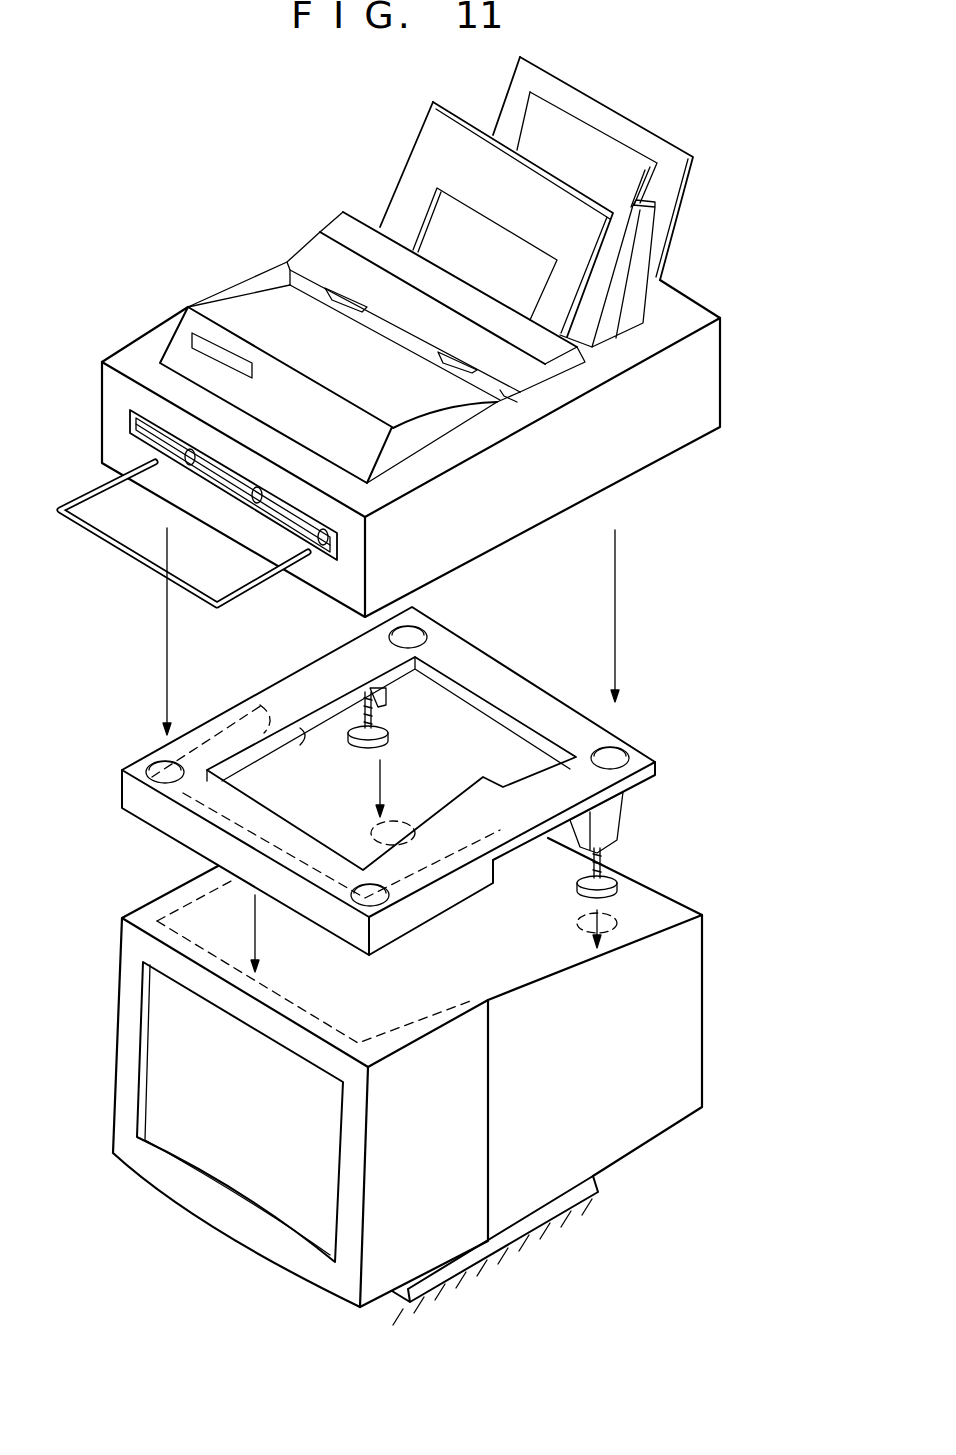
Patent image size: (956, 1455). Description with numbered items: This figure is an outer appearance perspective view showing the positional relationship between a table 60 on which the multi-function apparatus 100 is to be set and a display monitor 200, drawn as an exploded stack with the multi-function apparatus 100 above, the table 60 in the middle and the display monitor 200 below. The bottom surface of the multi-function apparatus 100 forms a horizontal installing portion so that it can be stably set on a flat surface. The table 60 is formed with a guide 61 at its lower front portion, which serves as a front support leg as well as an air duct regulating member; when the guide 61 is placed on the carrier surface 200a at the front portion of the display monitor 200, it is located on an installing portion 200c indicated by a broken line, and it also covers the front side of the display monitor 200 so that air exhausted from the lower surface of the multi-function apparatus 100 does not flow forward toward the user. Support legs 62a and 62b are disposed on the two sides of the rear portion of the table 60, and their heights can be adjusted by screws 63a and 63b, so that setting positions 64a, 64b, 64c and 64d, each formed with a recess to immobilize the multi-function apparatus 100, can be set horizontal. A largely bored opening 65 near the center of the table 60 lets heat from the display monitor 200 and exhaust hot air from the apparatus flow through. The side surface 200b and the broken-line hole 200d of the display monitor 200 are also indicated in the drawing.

The multi-function apparatus 100 is at (268, 252).
The table 60 is at (415, 795).
The guide 61 is at (173, 820).
The support leg 62a is at (617, 882).
The support leg 62b is at (387, 727).
The screw 63a is at (615, 855).
The screw 63b is at (392, 697).
The setting position 64a is at (425, 635).
The setting position 64b is at (623, 748).
The setting position 64c is at (349, 906).
The setting position 64d is at (157, 761).
The opening 65 is at (287, 738).
The display monitor 200 is at (411, 1081).
The carrier surface 200a is at (177, 913).
The side surface of monitor 200b is at (542, 957).
The installing portion 200c is at (238, 1145).
The screw hole 200d is at (617, 923).